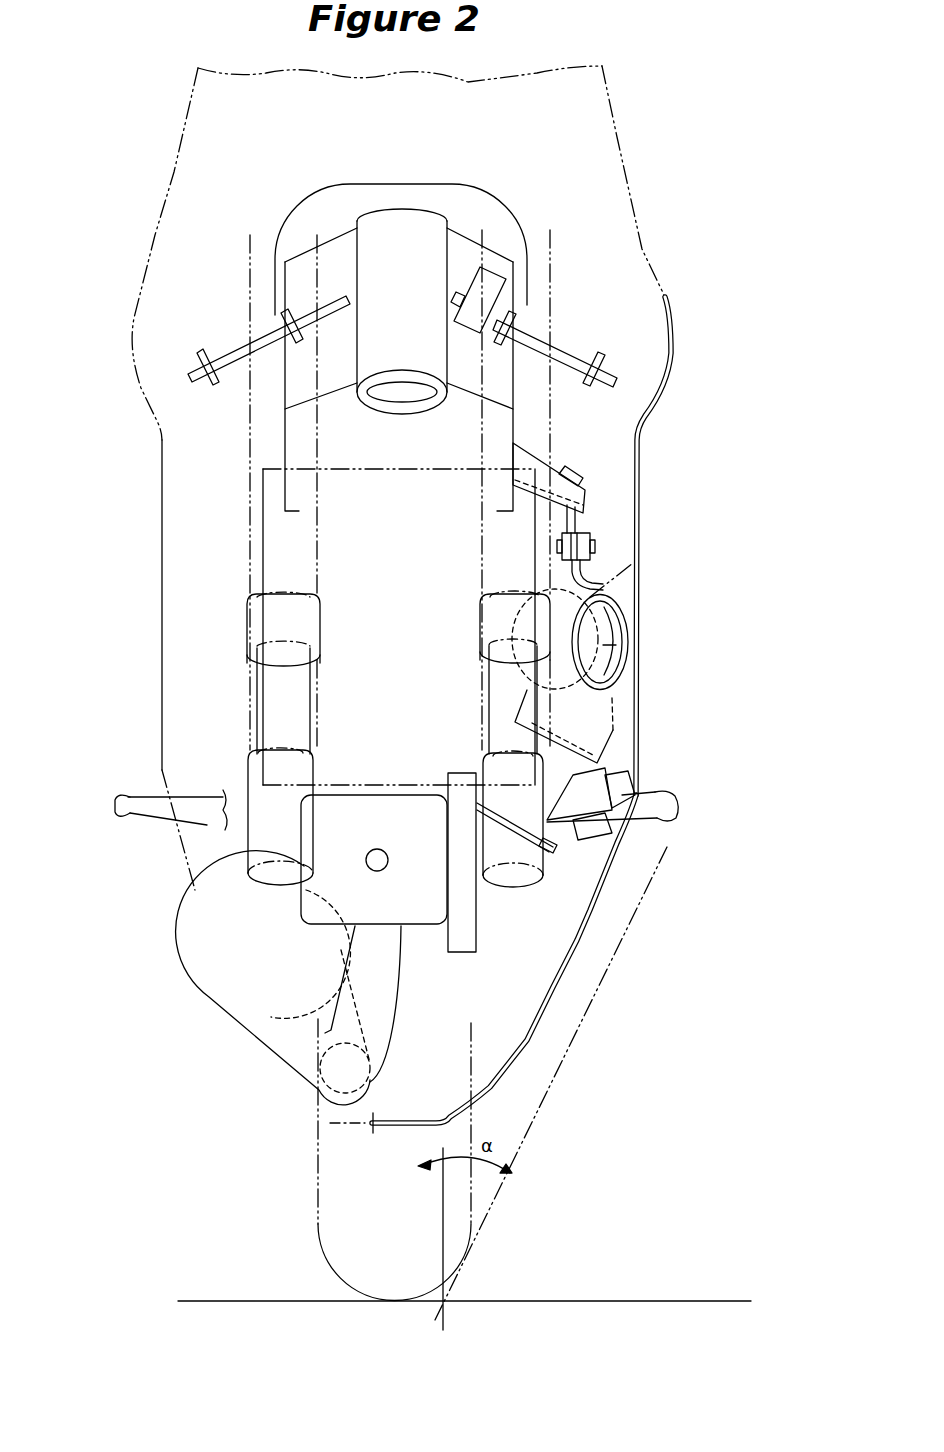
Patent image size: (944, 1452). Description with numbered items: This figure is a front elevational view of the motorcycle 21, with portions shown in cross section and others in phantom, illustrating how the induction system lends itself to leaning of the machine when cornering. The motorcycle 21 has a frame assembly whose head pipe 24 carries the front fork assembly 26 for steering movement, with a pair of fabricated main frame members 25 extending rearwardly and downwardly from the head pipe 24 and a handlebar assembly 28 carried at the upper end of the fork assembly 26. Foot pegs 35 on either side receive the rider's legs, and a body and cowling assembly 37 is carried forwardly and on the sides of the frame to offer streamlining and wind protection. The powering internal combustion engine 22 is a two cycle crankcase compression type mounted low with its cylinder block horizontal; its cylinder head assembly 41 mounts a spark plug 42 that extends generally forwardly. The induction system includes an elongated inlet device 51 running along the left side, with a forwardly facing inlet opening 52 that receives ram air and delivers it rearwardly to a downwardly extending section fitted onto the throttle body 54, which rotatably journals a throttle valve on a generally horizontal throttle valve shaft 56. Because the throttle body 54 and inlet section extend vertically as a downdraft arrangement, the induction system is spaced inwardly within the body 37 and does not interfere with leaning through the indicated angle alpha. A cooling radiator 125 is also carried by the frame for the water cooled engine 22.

The motorcycle 21 is at (684, 532).
The internal combustion engine 22 is at (540, 940).
The head pipe 24 is at (447, 249).
The main frame members 25 is at (301, 280).
The front fork assembly 26 is at (252, 679).
The handlebar assembly 28 is at (572, 342).
The foot pegs 35 is at (673, 790).
The body and cowling assembly 37 is at (640, 467).
The cylinder head assembly 41 is at (374, 838).
The spark plug 42 is at (376, 849).
The inlet device 51 is at (642, 648).
The inlet opening 52 is at (603, 643).
The throttle body 54 is at (553, 795).
The throttle valve shaft 56 is at (622, 790).
The cooling radiator 125 is at (259, 524).